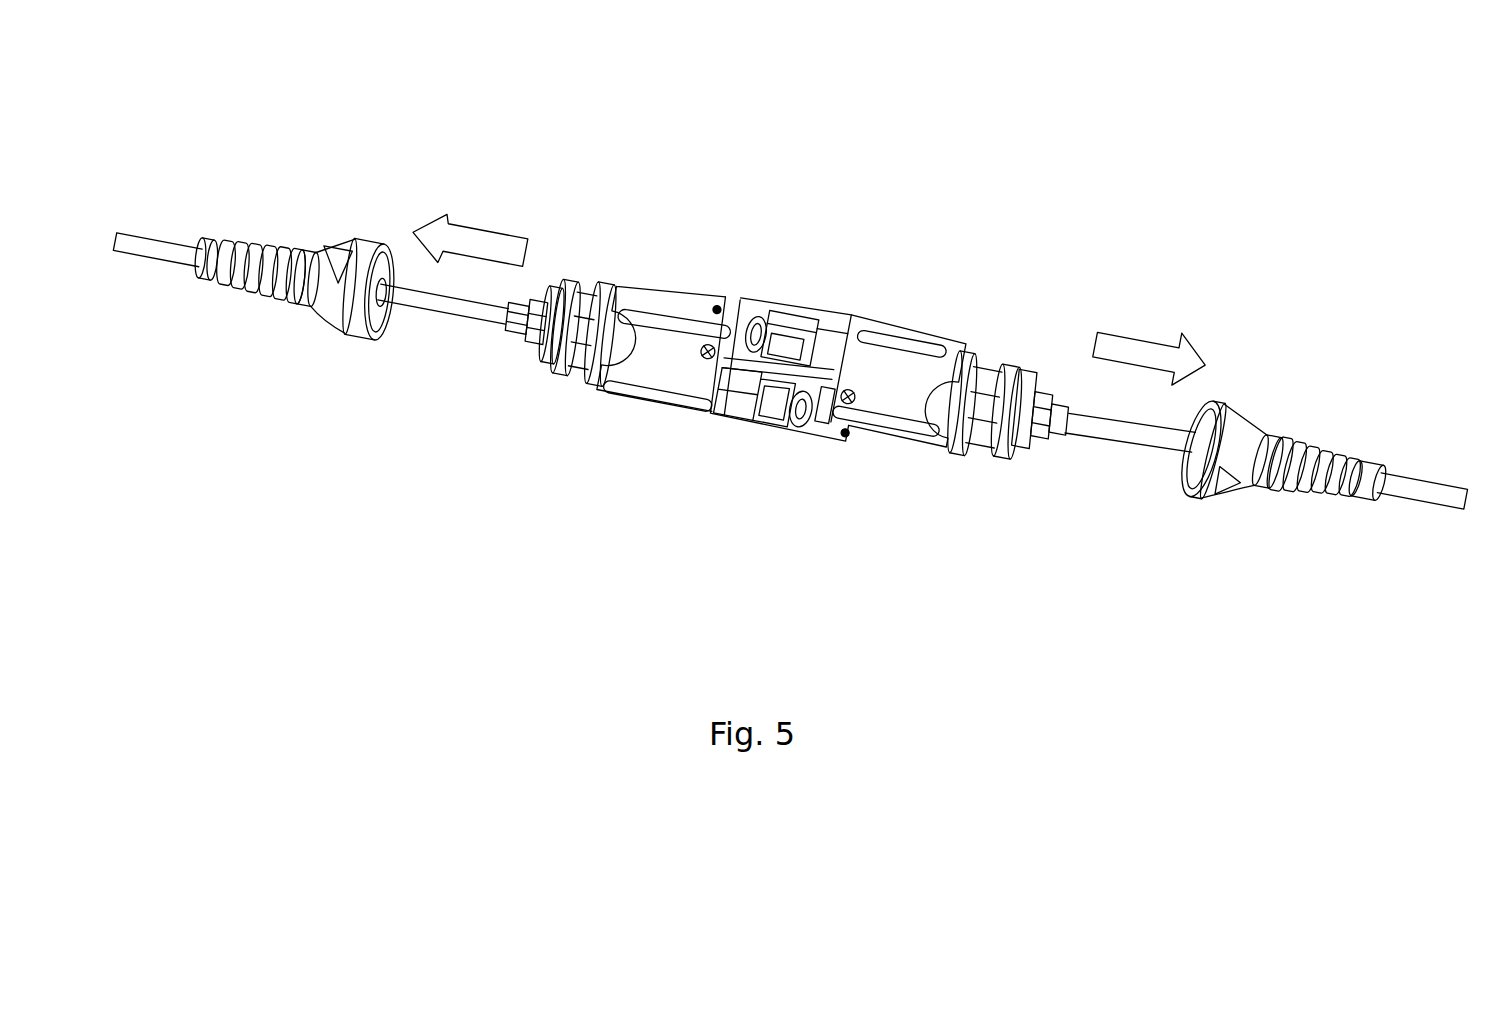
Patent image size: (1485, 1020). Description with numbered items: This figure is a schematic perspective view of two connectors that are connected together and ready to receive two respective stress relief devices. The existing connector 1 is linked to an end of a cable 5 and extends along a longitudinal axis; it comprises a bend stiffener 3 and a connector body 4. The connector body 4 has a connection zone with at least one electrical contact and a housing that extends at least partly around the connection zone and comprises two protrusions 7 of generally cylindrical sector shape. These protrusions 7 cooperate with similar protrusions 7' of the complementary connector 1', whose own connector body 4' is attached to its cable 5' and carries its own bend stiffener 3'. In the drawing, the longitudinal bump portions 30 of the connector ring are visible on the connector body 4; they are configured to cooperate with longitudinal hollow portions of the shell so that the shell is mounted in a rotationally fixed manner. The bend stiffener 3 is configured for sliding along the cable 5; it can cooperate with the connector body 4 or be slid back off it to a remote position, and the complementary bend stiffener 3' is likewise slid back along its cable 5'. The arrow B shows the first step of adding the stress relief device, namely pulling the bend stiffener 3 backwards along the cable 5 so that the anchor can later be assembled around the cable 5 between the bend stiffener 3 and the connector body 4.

The connector 1 is at (685, 286).
The complementary connector 1' is at (971, 318).
The bend stiffener 3 is at (294, 237).
The bend stiffener 3' is at (1285, 434).
The connector body 4 is at (667, 296).
The connector body 4' is at (902, 351).
The cable 5 is at (157, 188).
The cable 5' is at (1266, 440).
The protrusions 7 is at (771, 283).
The protrusions 7' is at (789, 452).
The longitudinal bump portions 30 is at (638, 397).
The arrow B is at (482, 243).